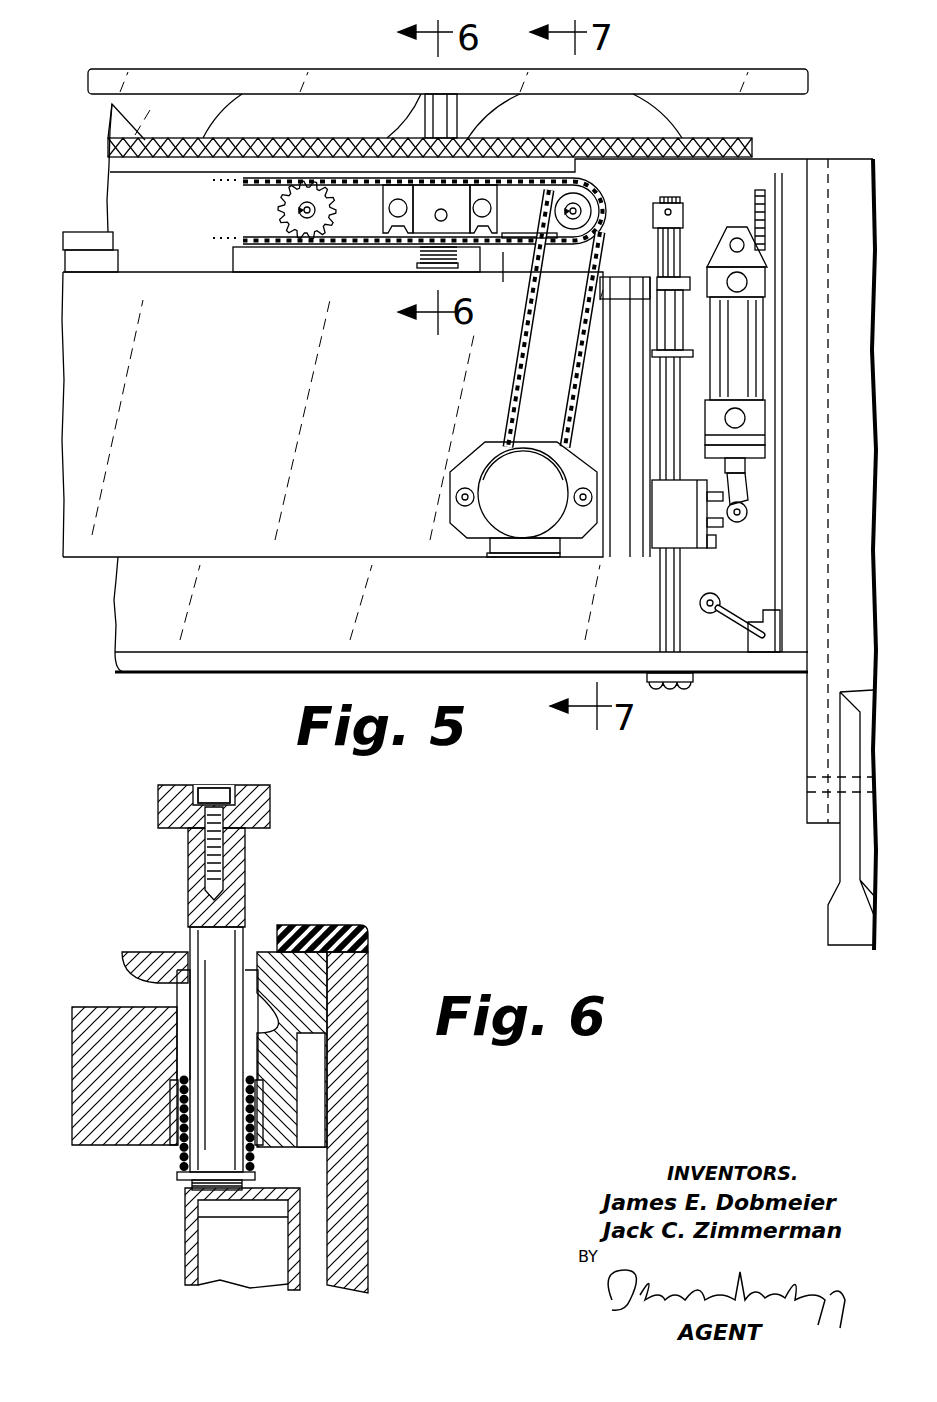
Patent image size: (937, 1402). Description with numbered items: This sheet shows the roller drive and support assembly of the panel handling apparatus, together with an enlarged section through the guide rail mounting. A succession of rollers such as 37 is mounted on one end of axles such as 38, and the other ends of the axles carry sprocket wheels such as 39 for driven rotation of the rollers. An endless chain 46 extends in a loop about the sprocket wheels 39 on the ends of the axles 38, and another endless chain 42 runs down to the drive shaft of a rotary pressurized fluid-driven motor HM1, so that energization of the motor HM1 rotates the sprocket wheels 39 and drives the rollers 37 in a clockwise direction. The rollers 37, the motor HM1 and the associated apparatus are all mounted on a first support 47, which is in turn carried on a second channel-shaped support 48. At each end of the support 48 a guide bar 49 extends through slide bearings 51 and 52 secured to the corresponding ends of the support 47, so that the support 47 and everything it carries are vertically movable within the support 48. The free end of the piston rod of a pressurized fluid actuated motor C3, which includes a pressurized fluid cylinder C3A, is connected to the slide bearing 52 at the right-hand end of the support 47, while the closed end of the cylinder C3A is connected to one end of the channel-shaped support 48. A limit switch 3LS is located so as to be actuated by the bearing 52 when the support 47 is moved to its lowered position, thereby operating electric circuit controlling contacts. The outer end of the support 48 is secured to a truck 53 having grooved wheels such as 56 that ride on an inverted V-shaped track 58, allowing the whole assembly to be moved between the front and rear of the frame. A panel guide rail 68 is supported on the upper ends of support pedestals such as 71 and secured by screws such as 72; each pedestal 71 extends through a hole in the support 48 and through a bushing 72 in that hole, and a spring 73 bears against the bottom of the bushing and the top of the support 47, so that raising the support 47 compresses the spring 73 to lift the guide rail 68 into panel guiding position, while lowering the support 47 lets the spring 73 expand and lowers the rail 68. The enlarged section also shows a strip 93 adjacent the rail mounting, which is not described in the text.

In FIG. 5, the roller 37 is at (233, 117).
In FIG. 5, the axle 38 is at (307, 216).
In FIG. 5, the sprocket wheel 39 is at (280, 207).
In FIG. 5, the endless chain 42 is at (512, 385).
In FIG. 5, the endless chain 46 is at (348, 248).
In FIG. 5, the first support 47 is at (272, 557).
In FIG. 6, the first support 47 is at (187, 1237).
In FIG. 5, the second channel-shaped support 48 is at (220, 668).
In FIG. 6, the second channel-shaped support 48 is at (357, 1167).
In FIG. 5, the guide bar 49 is at (665, 622).
In FIG. 5, the slide bearing 51 is at (686, 290).
In FIG. 5, the slide bearing 52 is at (693, 540).
In FIG. 5, the truck 53 is at (818, 748).
In FIG. 5, the grooved wheel 56 is at (848, 860).
In FIG. 5, the inverted V-shaped track 58 is at (840, 938).
In FIG. 5, the panel guide rail 68 is at (758, 80).
In FIG. 6, the panel guide rail 68 is at (258, 800).
In FIG. 5, the support pedestal 71 is at (448, 112).
In FIG. 6, the support pedestal 71 is at (236, 868).
In FIG. 6, the screw / bushing 72 is at (212, 790).
In FIG. 5, the spring 73 is at (458, 255).
In FIG. 6, the spring 73 is at (178, 1158).
In FIG. 5, the resilient strip 93 is at (110, 148).
In FIG. 6, the resilient strip 93 is at (343, 928).
In FIG. 5, the pressurized fluid actuated motor C3 is at (765, 352).
In FIG. 5, the pressurized fluid cylinder C3A is at (748, 325).
In FIG. 5, the rotary pressurized fluid-driven motor HM1 is at (525, 532).
In FIG. 5, the limit switch 3LS is at (770, 640).